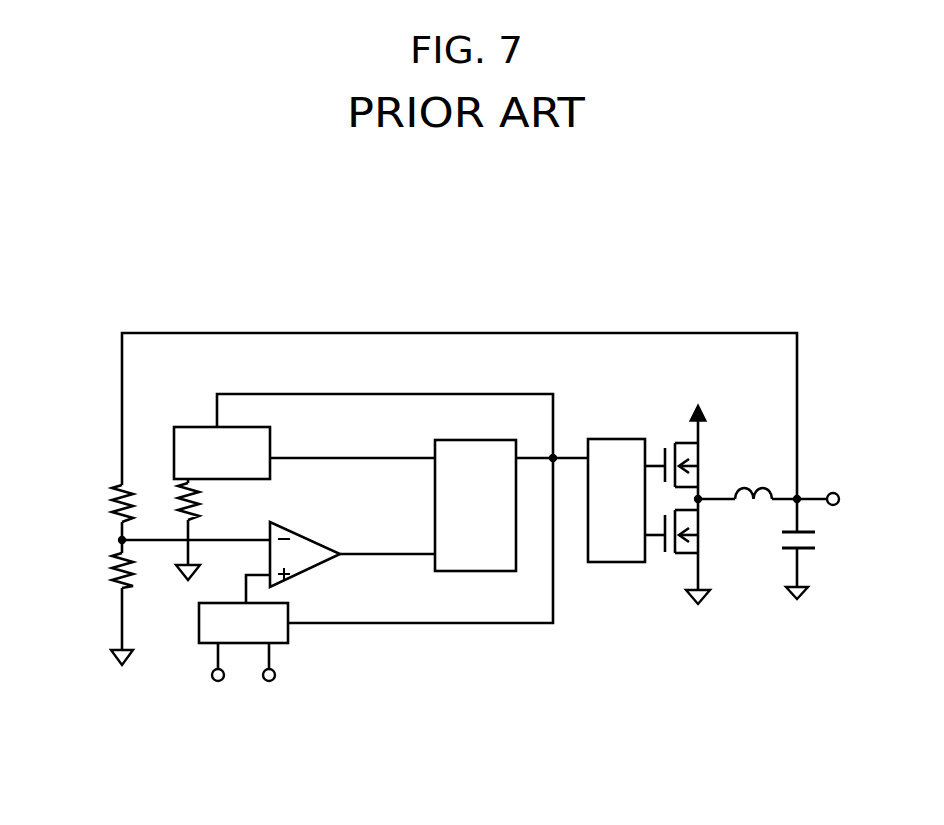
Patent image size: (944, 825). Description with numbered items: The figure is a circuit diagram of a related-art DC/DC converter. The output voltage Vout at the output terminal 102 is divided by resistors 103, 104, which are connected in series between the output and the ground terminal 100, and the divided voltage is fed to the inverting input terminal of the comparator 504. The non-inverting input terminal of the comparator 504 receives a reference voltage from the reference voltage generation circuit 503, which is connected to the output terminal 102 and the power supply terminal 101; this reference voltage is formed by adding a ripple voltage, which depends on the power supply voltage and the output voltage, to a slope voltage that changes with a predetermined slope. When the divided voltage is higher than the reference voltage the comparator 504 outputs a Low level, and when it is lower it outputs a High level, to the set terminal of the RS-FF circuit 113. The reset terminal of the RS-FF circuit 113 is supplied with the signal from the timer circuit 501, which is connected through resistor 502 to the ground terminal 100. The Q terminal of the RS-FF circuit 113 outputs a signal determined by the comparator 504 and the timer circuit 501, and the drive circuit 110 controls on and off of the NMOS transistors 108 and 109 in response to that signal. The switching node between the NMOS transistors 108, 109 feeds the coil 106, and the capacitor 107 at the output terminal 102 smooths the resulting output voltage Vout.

The ground terminal 100 is at (122, 669).
The power supply terminal 101 is at (268, 688).
The output terminal 102 is at (216, 688).
The resistor 103 is at (110, 500).
The resistor 104 is at (110, 566).
The coil 106 is at (752, 512).
The capacitor 107 is at (815, 540).
The NMOS transistor 108 is at (672, 443).
The NMOS transistor 109 is at (668, 558).
The drive circuit 110 is at (612, 564).
The RS-FF circuit 113 is at (472, 572).
The timer circuit 501 is at (190, 424).
The resistor 502 is at (200, 503).
The reference voltage generation circuit 503 is at (293, 642).
The comparator 504 is at (330, 546).